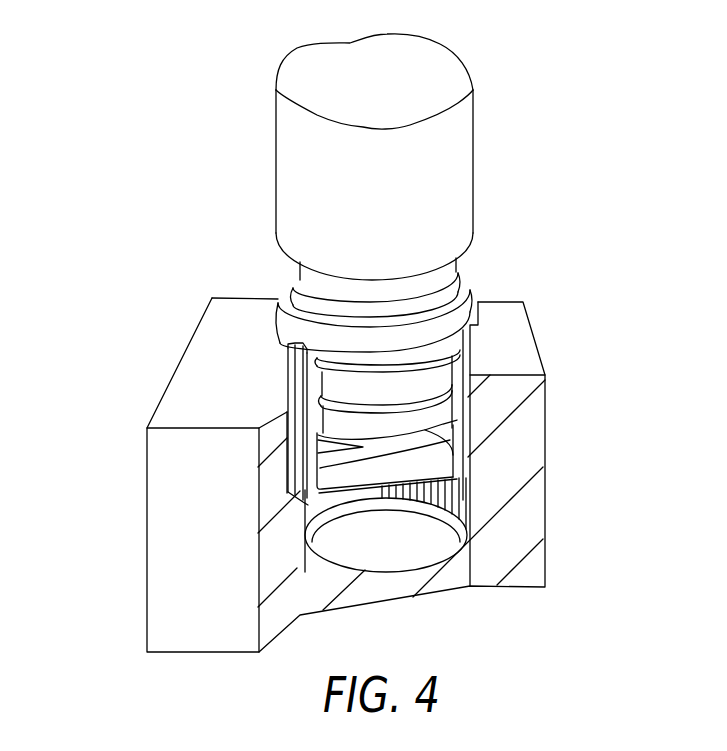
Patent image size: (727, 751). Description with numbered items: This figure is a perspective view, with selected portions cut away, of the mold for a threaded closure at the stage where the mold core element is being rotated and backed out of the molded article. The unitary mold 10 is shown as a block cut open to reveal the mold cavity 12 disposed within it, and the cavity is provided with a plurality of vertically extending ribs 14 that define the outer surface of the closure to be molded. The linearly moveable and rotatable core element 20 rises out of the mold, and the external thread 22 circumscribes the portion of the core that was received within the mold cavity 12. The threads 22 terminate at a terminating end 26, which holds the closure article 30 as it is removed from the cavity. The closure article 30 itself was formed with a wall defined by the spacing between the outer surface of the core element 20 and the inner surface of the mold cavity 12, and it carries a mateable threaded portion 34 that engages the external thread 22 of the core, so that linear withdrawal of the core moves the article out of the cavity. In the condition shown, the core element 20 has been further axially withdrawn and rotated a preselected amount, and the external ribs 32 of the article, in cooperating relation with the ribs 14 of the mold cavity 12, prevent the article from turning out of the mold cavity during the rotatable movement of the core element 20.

The unitary mold 10 is at (149, 484).
The mold cavity 12 is at (337, 555).
The vertically extending ribs 14 is at (455, 500).
The core element 20 is at (316, 152).
The external thread 22 is at (460, 272).
The terminating end 26 is at (327, 405).
The closure article 30 is at (465, 337).
The external ribs 32 is at (287, 365).
The mateable threaded portion 34 is at (440, 435).